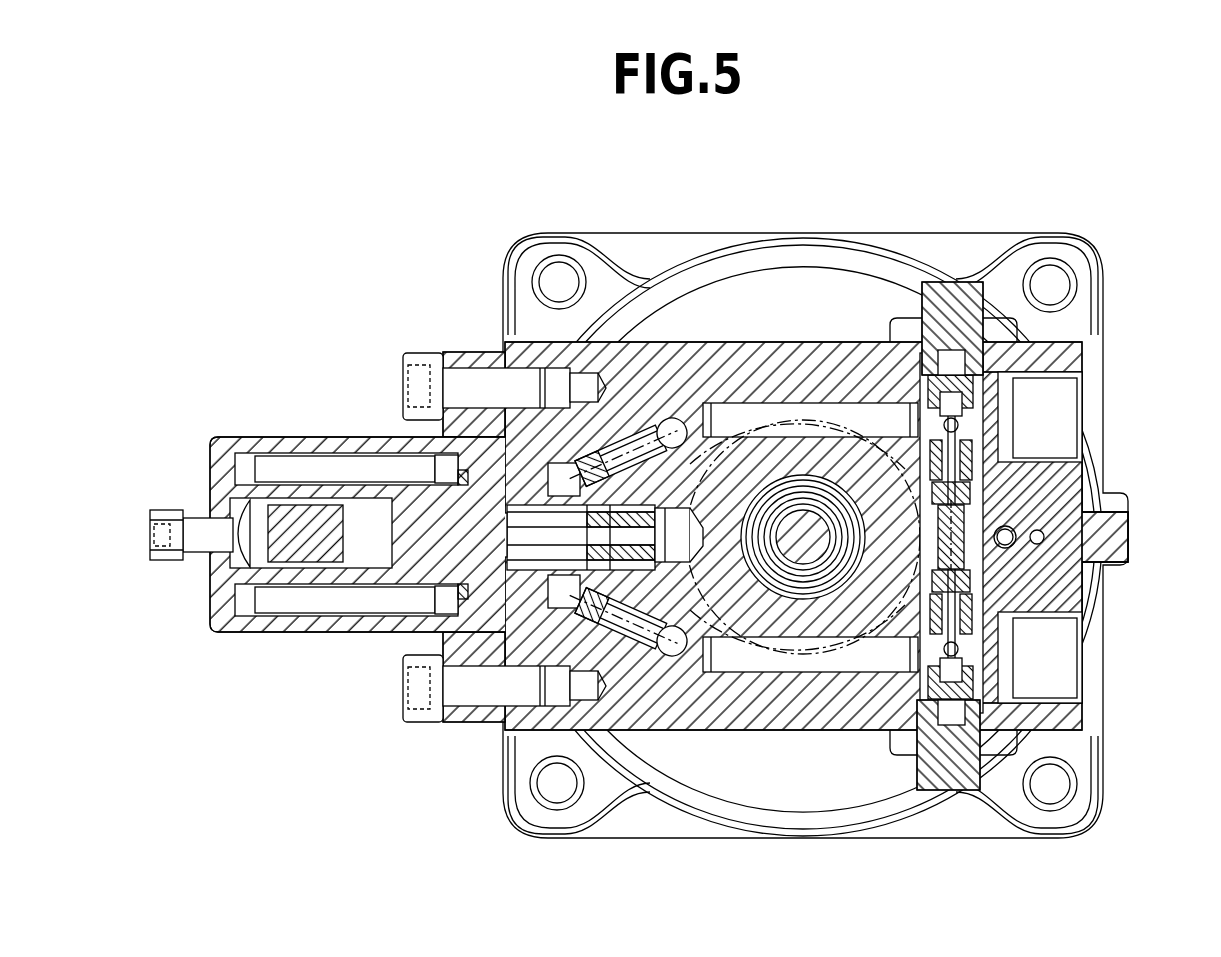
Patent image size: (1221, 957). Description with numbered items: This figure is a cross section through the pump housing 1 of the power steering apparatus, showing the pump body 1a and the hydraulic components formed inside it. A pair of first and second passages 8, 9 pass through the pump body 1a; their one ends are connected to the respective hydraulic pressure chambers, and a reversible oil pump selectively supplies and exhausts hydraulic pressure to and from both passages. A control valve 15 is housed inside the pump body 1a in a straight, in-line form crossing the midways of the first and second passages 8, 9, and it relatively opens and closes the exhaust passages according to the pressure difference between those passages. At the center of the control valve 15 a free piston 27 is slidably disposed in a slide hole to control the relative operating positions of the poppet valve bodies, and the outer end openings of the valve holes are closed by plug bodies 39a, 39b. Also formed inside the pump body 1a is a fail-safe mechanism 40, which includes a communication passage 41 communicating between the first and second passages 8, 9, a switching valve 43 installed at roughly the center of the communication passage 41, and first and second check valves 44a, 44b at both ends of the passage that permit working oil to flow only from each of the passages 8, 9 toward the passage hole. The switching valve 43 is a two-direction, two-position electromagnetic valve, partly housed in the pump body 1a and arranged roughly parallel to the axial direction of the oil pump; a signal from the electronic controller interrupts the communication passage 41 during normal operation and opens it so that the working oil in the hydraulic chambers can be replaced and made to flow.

The pump housing 1 is at (1100, 464).
The pump body 1a is at (1067, 547).
The first passage 8 is at (1060, 393).
The second passage 9 is at (1060, 678).
The control valve 15 is at (905, 382).
The free piston 27 is at (965, 560).
The plug body 39a is at (958, 300).
The plug body 39b is at (975, 772).
The fail-safe mechanism 40 is at (299, 422).
The communication passage 41 is at (668, 430).
The switching valve 43 is at (499, 492).
The first check valve 44a is at (665, 425).
The second check valve 44b is at (668, 650).